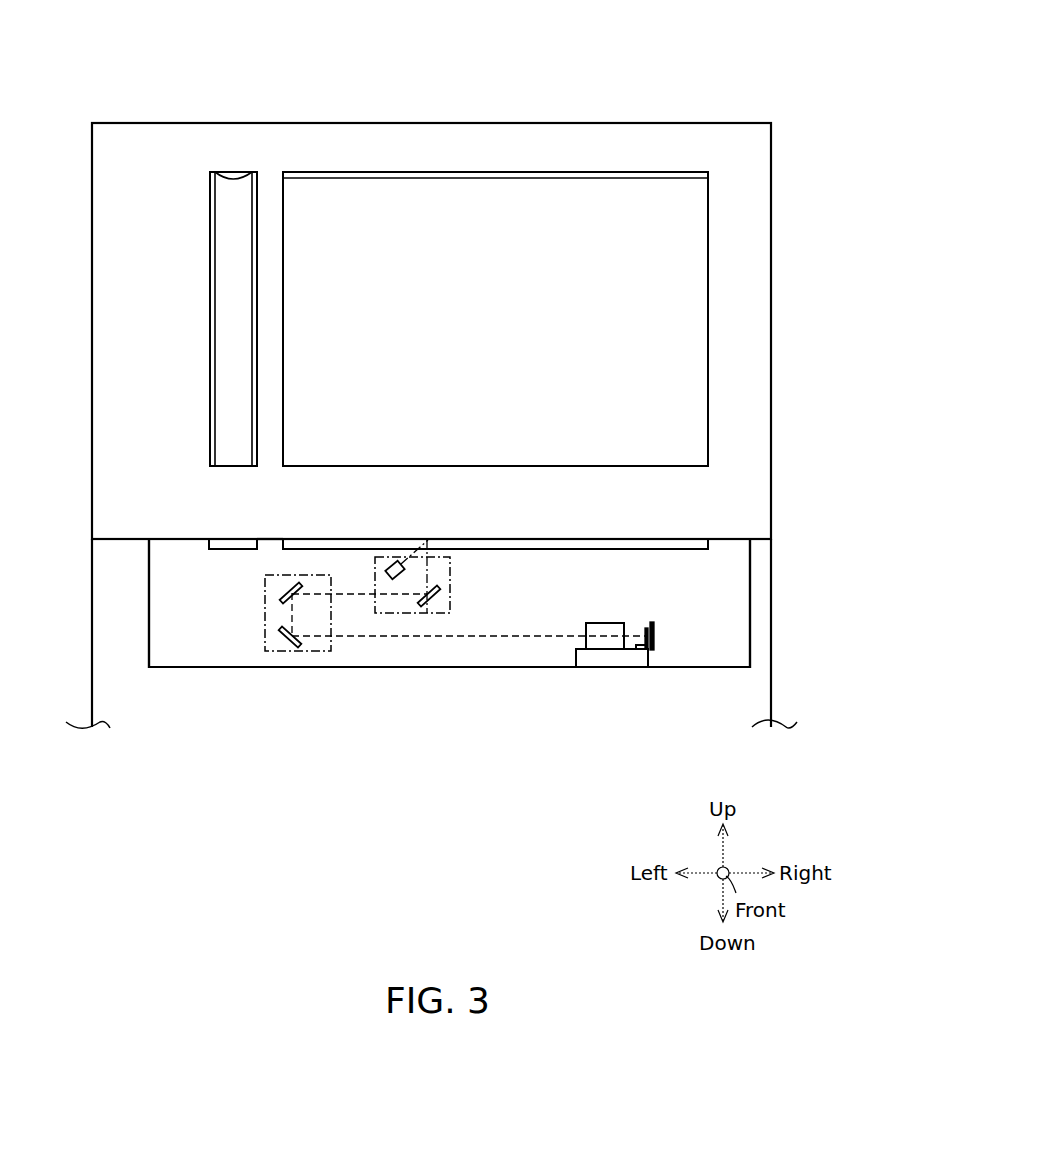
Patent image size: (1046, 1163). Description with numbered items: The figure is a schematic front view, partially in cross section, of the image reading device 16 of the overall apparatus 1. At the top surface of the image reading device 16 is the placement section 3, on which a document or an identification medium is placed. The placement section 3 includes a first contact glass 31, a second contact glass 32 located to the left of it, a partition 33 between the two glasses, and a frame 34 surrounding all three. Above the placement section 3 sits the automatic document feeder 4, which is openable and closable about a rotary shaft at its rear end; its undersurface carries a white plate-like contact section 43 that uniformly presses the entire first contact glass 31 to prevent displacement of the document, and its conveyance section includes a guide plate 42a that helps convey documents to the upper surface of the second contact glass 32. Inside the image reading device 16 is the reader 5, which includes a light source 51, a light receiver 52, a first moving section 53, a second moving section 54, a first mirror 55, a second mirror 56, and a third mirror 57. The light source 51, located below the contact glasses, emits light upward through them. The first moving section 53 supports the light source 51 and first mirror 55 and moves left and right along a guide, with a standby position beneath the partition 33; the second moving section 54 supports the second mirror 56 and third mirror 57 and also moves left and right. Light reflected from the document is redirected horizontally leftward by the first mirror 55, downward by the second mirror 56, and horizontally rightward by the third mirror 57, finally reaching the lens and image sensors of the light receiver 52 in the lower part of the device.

The image forming apparatus 1 is at (774, 82).
The placement section 3 is at (617, 525).
The automatic document feeder 4 is at (669, 108).
The reader 5 is at (507, 690).
The image reading device 16 is at (757, 604).
The first contact glass 31 is at (693, 543).
The second contact glass 32 is at (224, 543).
The partition 33 is at (268, 546).
The frame 34 is at (738, 546).
The guide plate 42a is at (234, 236).
The contact section 43 is at (690, 258).
The light source 51 is at (391, 576).
The light receiver 52 is at (660, 640).
The first moving section 53 is at (408, 613).
The second moving section 54 is at (273, 655).
The first mirror 55 is at (436, 599).
The second mirror 56 is at (297, 596).
The third mirror 57 is at (293, 648).